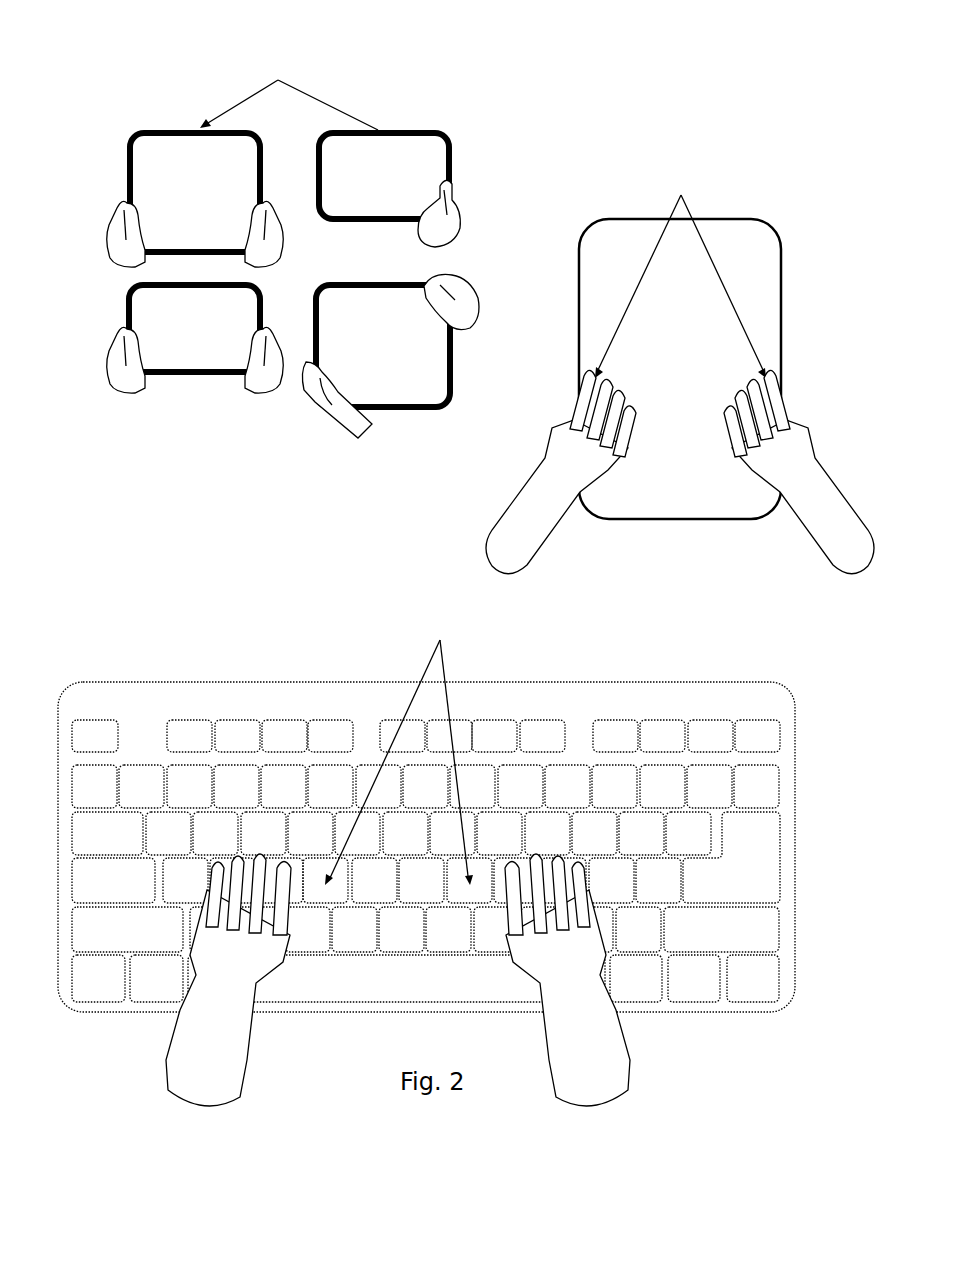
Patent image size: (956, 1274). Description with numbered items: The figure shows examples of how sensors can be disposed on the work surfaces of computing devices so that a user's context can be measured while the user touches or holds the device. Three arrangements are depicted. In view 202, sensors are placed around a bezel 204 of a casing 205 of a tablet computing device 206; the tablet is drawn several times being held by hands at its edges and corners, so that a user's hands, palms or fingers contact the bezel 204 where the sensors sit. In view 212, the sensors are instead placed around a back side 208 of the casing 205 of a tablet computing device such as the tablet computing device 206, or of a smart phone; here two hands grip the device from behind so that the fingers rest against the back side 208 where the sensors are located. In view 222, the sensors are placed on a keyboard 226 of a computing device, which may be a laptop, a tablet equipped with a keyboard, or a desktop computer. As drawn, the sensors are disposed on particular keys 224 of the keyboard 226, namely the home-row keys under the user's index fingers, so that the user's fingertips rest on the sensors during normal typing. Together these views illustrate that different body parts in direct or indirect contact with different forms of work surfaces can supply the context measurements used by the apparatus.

The view 202 is at (392, 52).
The bezel 204 is at (127, 147).
The casing 205 is at (578, 273).
The tablet computing device 206 is at (455, 358).
The back side 208 is at (705, 475).
The view 212 is at (788, 145).
The view 222 is at (248, 585).
The keys 224 is at (558, 628).
The keyboard 226 is at (765, 777).